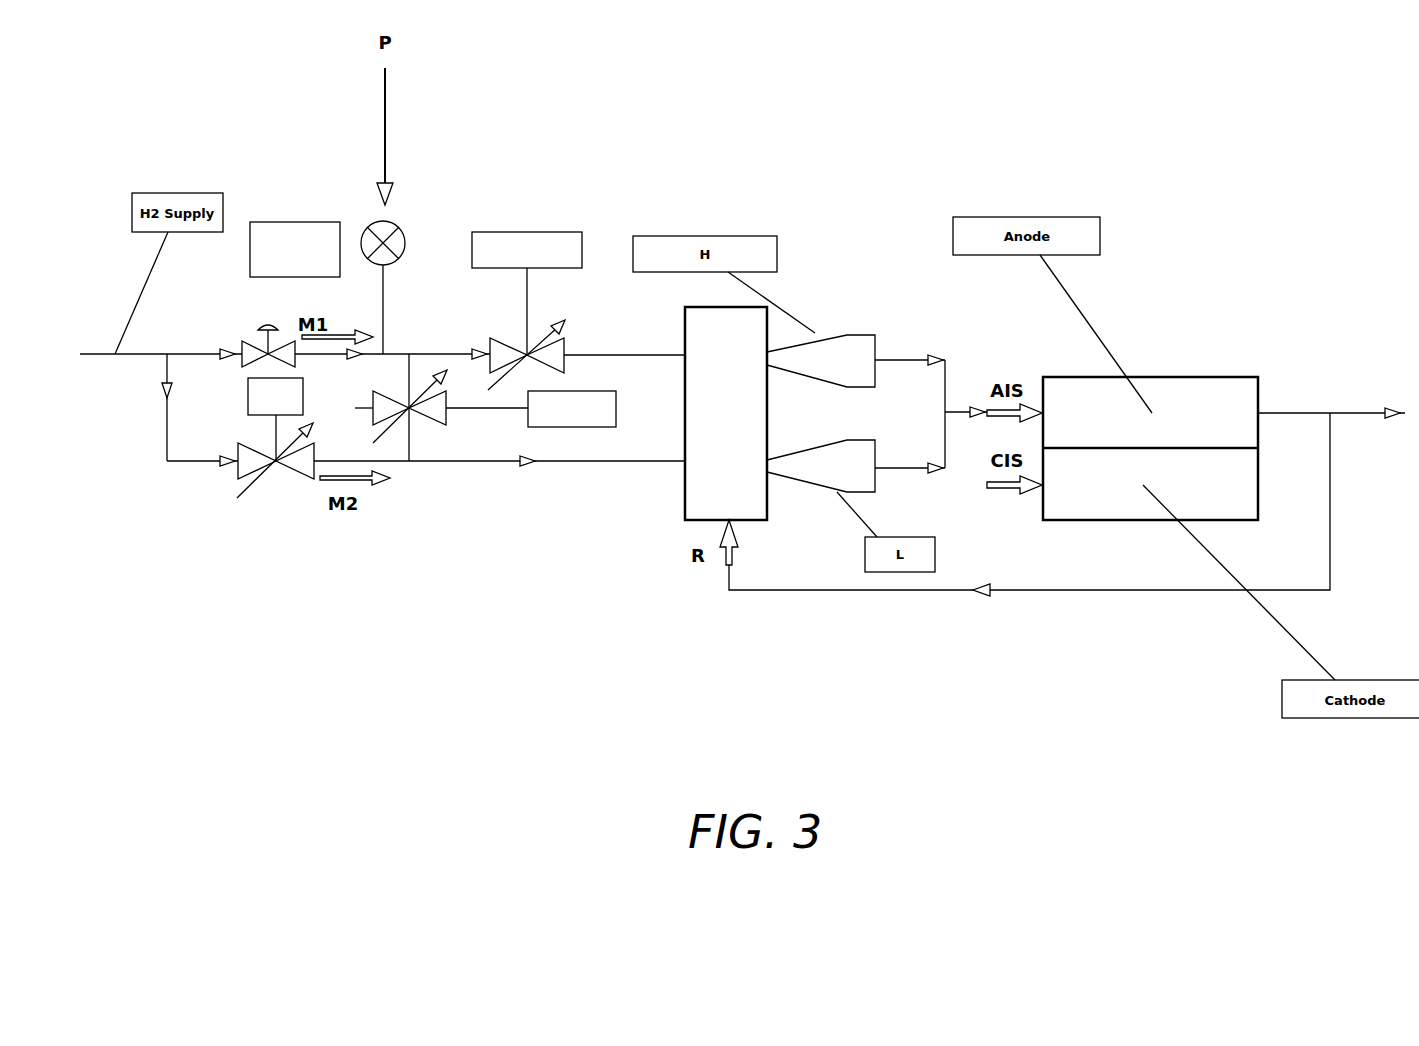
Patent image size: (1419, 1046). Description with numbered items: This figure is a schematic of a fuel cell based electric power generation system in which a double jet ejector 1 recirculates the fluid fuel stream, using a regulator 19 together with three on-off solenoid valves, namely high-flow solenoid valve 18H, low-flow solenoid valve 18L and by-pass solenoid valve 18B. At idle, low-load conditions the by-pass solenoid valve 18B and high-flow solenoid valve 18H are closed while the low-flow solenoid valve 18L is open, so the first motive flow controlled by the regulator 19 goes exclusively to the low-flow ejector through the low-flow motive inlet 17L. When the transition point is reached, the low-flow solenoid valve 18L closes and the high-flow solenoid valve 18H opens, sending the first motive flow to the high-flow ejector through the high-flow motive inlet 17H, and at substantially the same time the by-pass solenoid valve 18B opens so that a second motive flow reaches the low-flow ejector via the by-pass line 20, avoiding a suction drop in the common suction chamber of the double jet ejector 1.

The double jet ejector 1 is at (805, 262).
The high-flow motive inlet 17H is at (665, 340).
The low-flow motive inlet 17L is at (662, 477).
The by-pass solenoid valve 18B is at (275, 438).
The high-flow solenoid valve 18H is at (527, 311).
The low-flow solenoid valve 18L is at (485, 407).
The regulator 19 is at (268, 328).
The by-pass line 20 is at (158, 479).